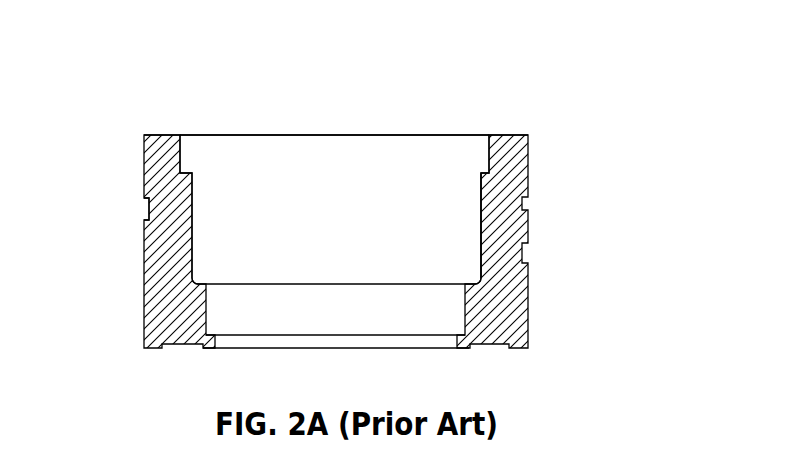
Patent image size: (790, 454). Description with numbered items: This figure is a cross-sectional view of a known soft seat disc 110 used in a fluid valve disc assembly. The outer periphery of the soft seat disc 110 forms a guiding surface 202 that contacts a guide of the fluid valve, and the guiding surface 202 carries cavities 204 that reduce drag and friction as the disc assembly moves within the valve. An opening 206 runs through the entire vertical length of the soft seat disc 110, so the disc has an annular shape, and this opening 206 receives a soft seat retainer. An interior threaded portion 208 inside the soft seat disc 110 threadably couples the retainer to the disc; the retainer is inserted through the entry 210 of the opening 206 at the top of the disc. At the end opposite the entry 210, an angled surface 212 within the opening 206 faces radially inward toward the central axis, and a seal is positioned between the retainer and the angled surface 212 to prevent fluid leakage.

The soft seat disc 110 is at (595, 77).
The guiding surface 202 is at (527, 180).
The cavities 204 is at (148, 205).
The opening 206 is at (295, 122).
The interior threaded portion 208 is at (489, 216).
The entry 210 is at (360, 135).
The angled surface 212 is at (210, 343).